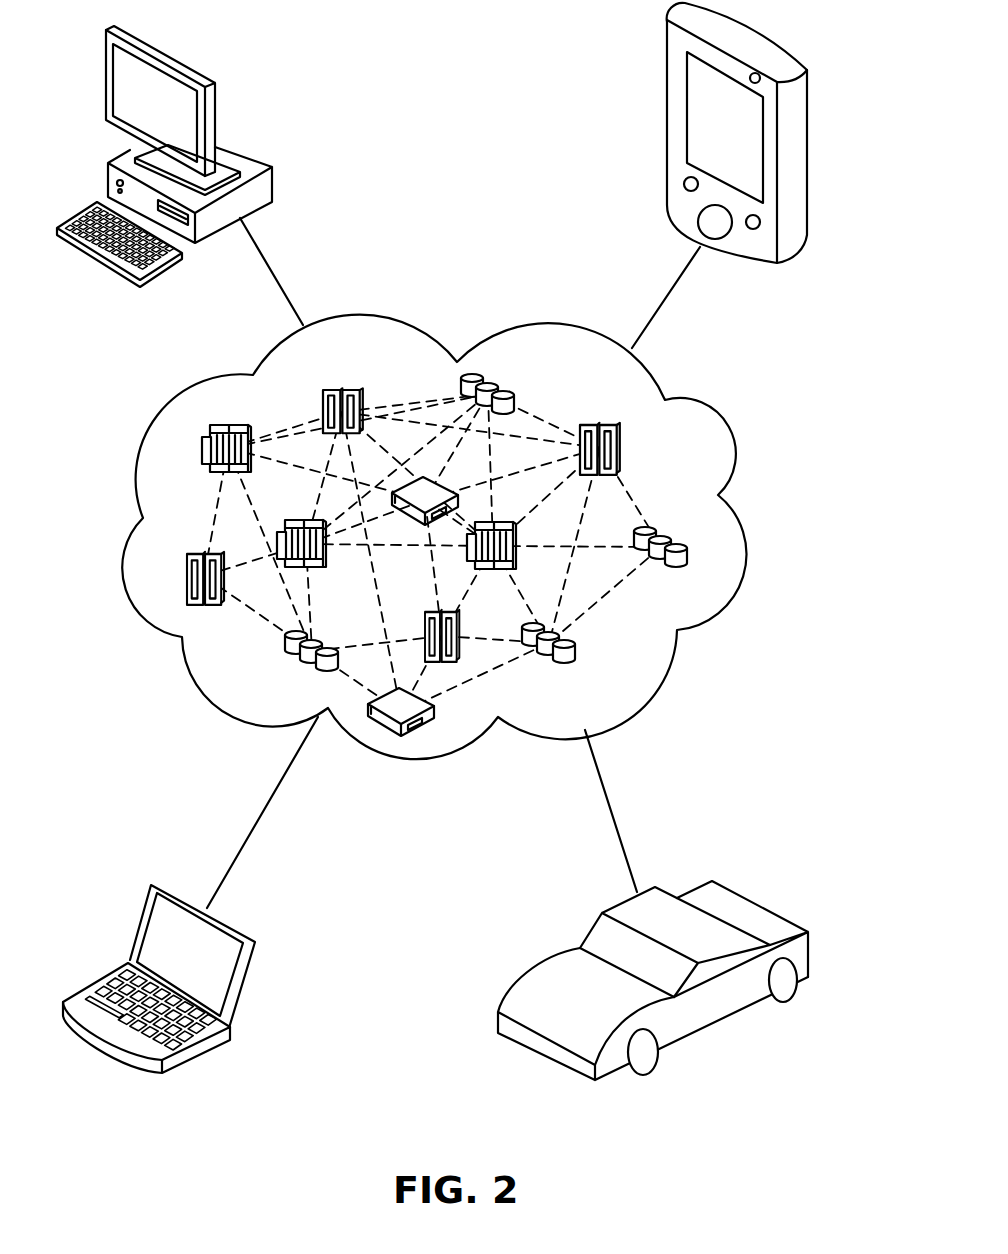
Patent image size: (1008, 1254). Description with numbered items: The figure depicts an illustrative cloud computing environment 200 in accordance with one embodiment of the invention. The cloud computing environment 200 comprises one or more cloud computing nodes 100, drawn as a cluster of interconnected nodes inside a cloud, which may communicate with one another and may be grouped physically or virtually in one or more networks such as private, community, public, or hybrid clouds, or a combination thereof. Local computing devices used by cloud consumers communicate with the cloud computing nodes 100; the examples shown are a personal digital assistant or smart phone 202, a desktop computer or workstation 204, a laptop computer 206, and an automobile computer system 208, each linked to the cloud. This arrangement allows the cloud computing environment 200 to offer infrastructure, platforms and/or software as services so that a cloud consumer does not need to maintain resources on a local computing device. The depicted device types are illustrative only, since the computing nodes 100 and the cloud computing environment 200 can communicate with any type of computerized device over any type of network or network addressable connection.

The cloud computing nodes 100 is at (668, 473).
The cloud computing environment 200 is at (460, 218).
The personal digital assistant or smart phone 202 is at (668, 80).
The desktop computer 204 is at (275, 182).
The laptop computer 206 is at (255, 952).
The automobile computer system 208 is at (812, 948).